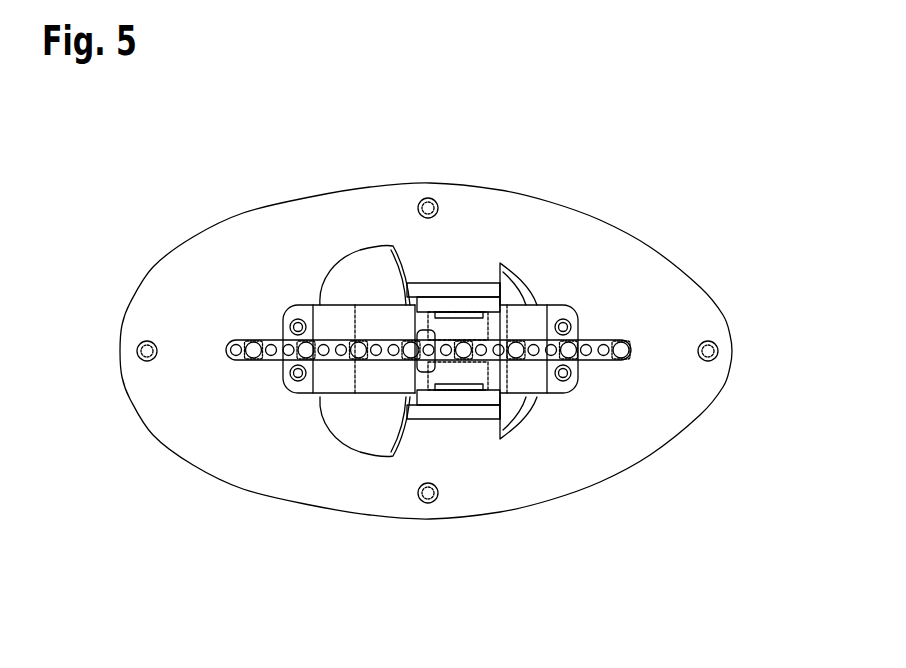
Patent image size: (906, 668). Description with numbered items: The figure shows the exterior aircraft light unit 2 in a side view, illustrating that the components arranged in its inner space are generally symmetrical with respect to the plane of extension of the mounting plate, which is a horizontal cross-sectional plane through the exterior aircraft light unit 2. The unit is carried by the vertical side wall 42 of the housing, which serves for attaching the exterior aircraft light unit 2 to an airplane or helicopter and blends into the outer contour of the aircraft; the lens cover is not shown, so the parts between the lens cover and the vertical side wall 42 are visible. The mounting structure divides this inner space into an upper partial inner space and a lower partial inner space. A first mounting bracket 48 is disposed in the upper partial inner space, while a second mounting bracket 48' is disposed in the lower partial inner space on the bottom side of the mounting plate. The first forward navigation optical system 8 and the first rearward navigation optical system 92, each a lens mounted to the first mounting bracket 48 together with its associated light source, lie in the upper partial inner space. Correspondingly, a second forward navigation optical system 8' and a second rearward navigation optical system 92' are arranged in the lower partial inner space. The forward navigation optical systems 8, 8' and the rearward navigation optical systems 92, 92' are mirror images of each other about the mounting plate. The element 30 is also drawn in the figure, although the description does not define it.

The exterior aircraft light unit 2 is at (586, 178).
The first forward navigation optical system 8 is at (348, 208).
The second forward navigation optical system 8' is at (346, 499).
The saw chain 30 is at (642, 349).
The vertical side wall 42 is at (645, 250).
The first mounting bracket 48 is at (439, 230).
The second mounting bracket 48' is at (458, 482).
The first rearward navigation optical system 92 is at (518, 196).
The second rearward navigation optical system 92' is at (572, 478).